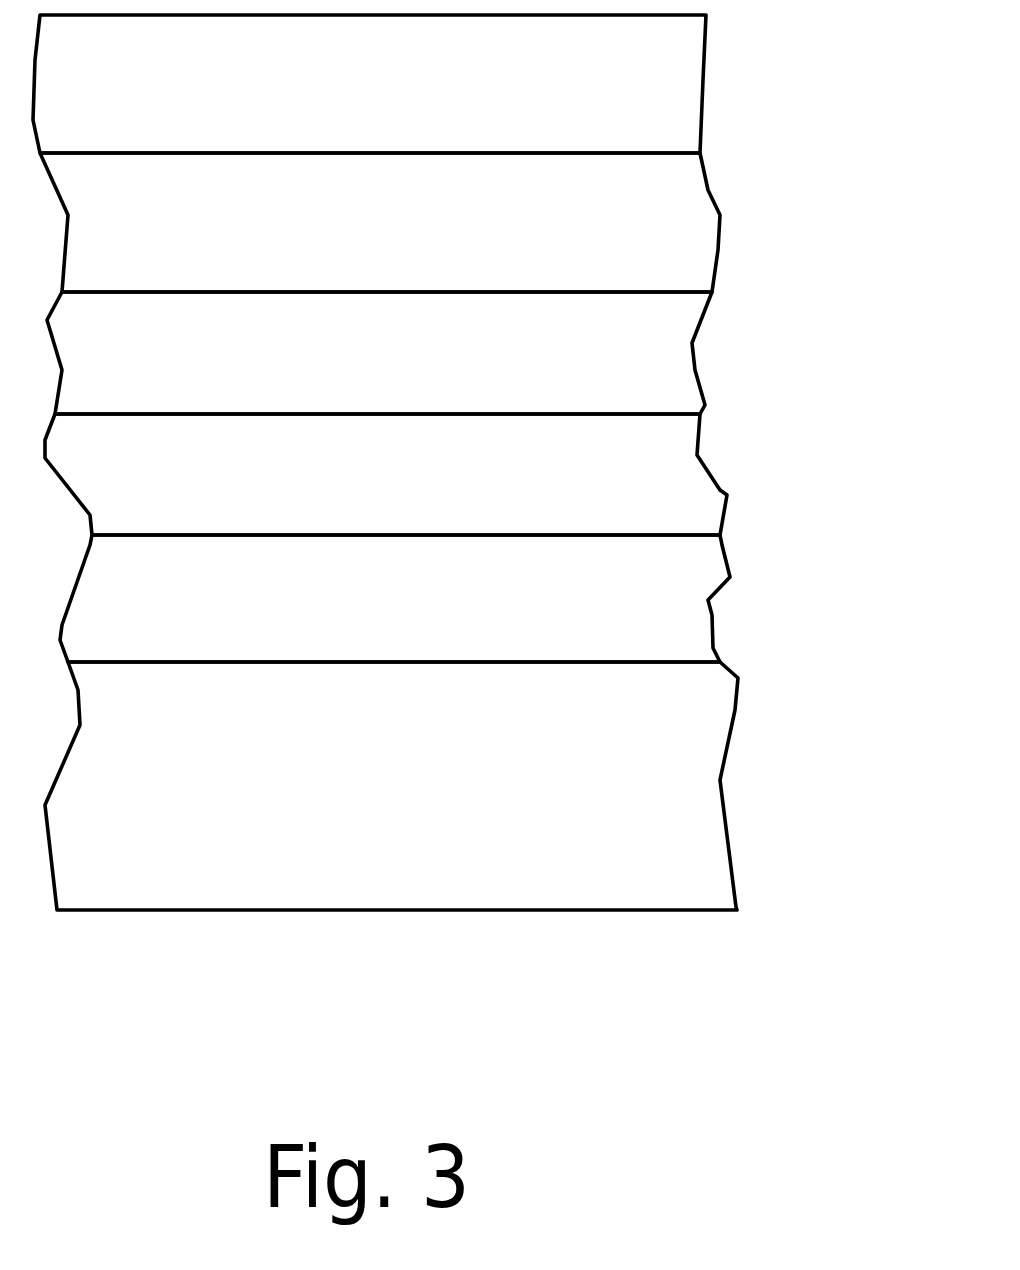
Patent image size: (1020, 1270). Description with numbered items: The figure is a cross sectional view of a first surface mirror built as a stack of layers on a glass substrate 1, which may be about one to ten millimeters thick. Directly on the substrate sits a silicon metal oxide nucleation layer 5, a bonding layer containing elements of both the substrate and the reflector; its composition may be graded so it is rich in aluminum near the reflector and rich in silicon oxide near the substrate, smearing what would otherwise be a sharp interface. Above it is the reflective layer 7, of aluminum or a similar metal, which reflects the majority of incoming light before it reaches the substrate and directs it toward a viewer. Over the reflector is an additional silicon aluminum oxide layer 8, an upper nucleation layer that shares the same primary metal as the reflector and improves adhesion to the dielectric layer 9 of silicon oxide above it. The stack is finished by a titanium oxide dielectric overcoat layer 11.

The glass substrate 1 is at (685, 828).
The silicon metal oxide nucleation layer 5 is at (672, 592).
The reflective layer 7 is at (653, 472).
The silicon aluminum oxide layer 8 is at (647, 358).
The dielectric layer 9 is at (663, 240).
The dielectric overcoat layer 11 is at (685, 90).